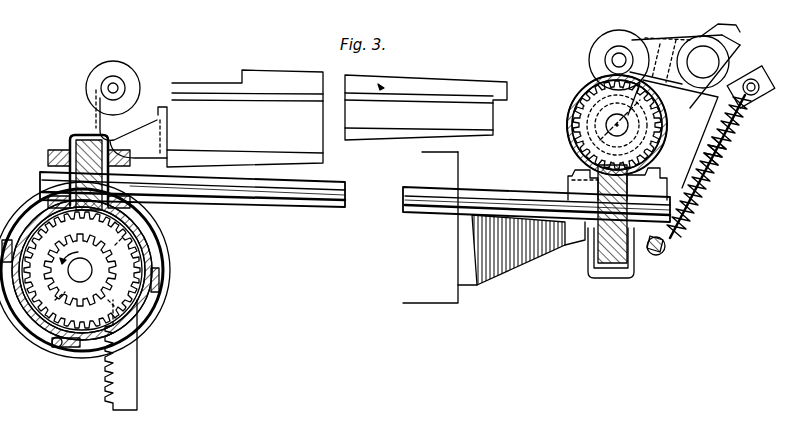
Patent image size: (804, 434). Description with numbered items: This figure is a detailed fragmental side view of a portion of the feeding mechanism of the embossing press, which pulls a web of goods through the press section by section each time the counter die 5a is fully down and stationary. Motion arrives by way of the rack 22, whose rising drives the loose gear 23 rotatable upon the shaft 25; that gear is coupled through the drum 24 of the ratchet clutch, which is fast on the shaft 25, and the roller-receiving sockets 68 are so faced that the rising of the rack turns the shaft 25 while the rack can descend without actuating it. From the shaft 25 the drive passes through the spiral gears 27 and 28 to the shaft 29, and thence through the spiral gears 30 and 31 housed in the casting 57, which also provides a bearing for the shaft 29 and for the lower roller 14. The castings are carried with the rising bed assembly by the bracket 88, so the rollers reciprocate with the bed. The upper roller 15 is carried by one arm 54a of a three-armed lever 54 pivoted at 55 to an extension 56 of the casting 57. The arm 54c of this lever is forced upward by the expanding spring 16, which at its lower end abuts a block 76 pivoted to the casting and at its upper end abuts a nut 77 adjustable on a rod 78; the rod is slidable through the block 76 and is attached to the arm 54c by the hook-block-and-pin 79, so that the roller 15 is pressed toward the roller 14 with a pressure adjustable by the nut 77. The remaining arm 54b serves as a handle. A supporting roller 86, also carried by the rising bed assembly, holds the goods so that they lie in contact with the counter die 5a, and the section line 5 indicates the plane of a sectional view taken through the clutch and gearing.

The section line 5 is at (95, 62).
The counter die 5a is at (256, 78).
The roller 86 is at (123, 73).
The spiral gear 28 is at (72, 146).
The shaft 29 is at (418, 214).
The bracket 88 is at (524, 256).
The spiral gear 30 is at (592, 272).
The block 76 is at (666, 252).
The spring 16 is at (692, 207).
The nut 77 is at (714, 163).
The rod 78 is at (726, 137).
The hook-block-and-pin 79 is at (750, 96).
The arm of three-armed lever 54c is at (738, 74).
The three-armed lever 54 is at (732, 64).
The arm of three-armed lever 54a is at (667, 60).
The arm of three-armed lever 54b is at (712, 30).
The pivot 55 is at (703, 62).
The upper roller 15 is at (604, 44).
The extension of casting 56 is at (673, 134).
The spiral gear 31 is at (657, 139).
The casting 57 is at (648, 186).
The lower roller 14 is at (586, 138).
The shaft 25 is at (88, 271).
The roller-receiving sockets 68 is at (160, 288).
The spiral gear 27 is at (128, 318).
The rack 22 is at (130, 386).
The loose gear 23 is at (26, 328).
The drum of ratchet clutch 24 is at (46, 334).